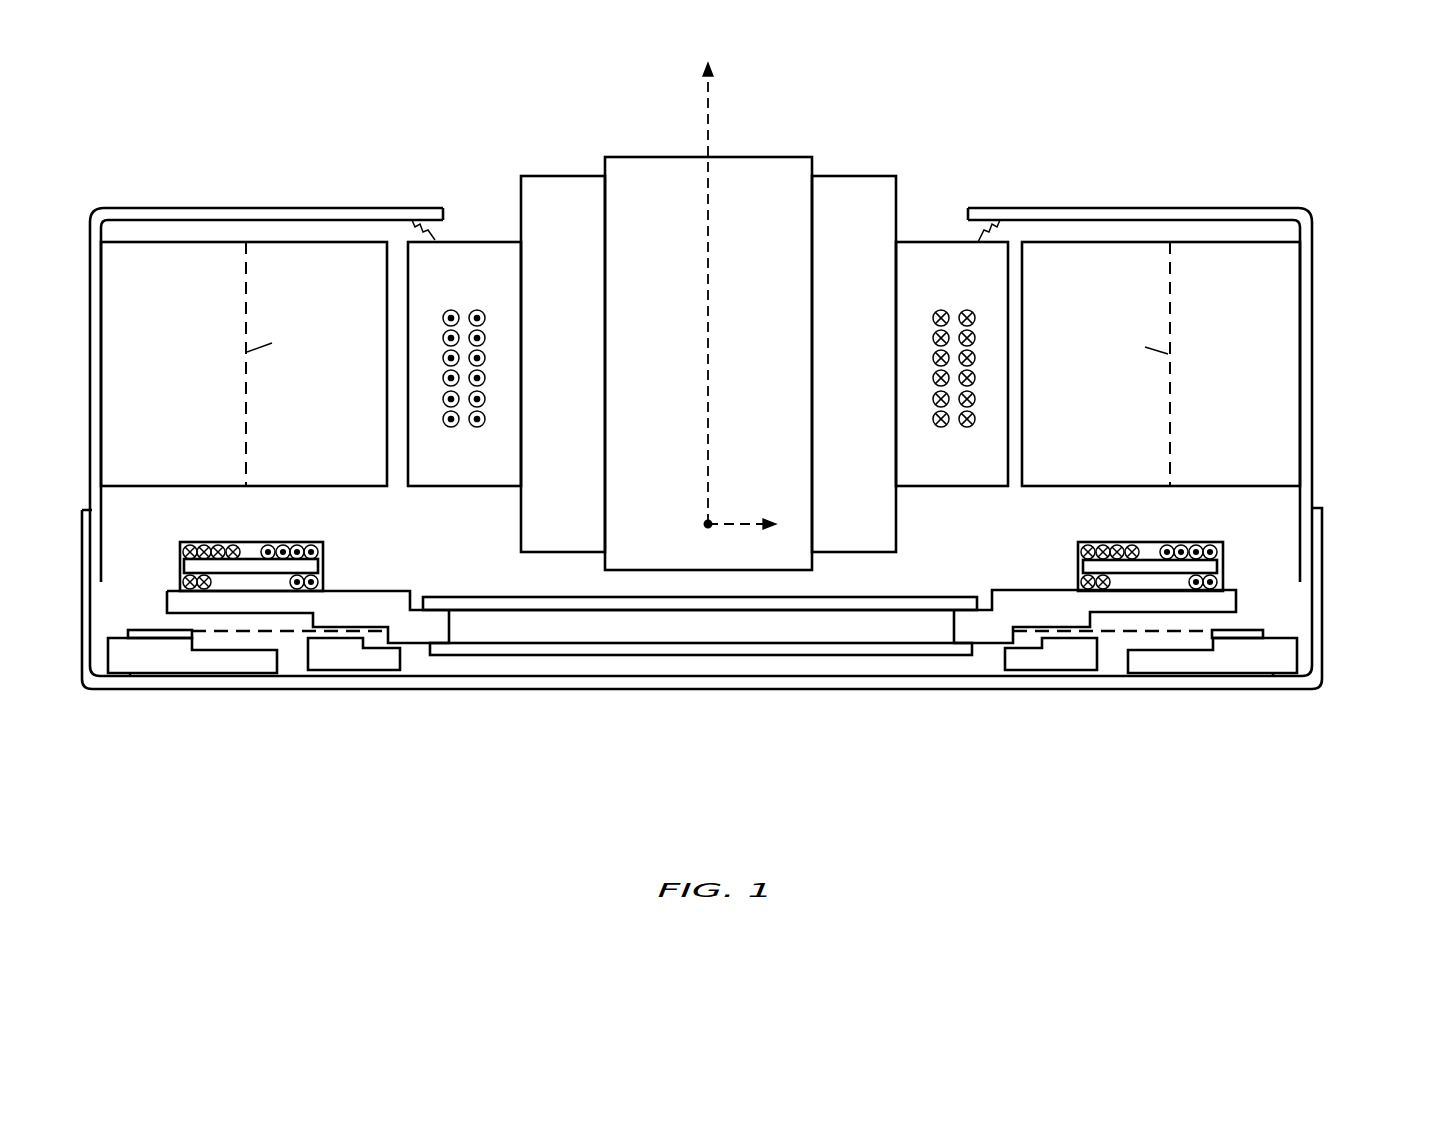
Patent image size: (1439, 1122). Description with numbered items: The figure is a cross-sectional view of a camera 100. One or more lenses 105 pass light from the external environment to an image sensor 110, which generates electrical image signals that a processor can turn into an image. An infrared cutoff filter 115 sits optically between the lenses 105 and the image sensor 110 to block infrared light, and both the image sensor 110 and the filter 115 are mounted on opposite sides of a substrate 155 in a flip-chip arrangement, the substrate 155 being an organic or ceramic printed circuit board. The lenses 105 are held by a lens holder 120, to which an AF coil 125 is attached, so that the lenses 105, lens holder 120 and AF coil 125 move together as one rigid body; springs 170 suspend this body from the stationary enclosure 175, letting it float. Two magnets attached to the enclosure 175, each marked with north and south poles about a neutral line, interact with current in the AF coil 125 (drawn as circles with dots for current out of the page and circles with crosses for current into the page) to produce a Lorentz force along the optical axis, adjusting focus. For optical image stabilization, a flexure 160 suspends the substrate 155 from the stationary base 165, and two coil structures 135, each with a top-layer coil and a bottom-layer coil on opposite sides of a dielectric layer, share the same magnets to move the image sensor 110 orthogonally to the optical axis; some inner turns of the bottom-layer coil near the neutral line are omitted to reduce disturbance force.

The camera 100 is at (1090, 97).
The lenses 105 is at (708, 363).
The image sensor 110 is at (556, 650).
The infrared cutoff filter (IRCF) 115 is at (905, 604).
The lens holder 120 is at (870, 392).
The AF coil 125 is at (969, 299).
The coil structure 135 is at (1267, 463).
The substrate 155 is at (425, 628).
The flexure 160 is at (301, 633).
The stationary base 165 is at (185, 663).
The spring 170 is at (423, 218).
The enclosure 175 is at (195, 208).